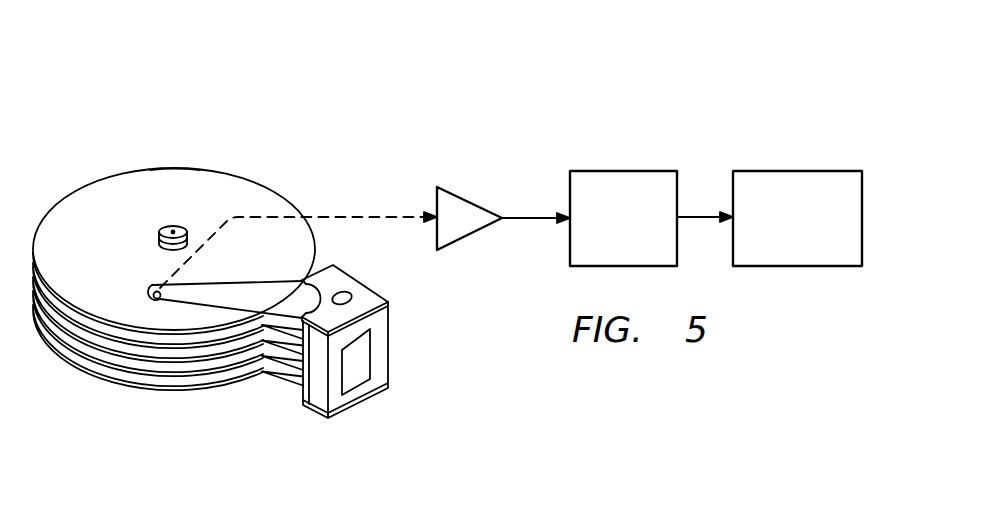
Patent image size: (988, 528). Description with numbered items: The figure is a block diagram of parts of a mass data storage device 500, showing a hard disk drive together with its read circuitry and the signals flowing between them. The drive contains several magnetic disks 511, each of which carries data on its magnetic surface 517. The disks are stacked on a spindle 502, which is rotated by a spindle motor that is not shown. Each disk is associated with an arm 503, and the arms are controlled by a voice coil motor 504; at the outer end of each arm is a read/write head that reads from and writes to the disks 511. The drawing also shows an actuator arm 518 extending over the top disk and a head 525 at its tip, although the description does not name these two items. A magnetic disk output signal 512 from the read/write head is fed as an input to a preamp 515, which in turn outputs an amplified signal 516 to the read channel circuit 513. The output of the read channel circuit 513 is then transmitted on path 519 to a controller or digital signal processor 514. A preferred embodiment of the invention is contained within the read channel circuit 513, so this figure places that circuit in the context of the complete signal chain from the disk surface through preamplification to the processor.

The mass data storage device 500 is at (291, 136).
The magnetic disks 511 is at (88, 196).
The magnetic surface 517 is at (172, 168).
The spindle 502 is at (163, 227).
The actuator arm 518 is at (236, 283).
The read head 525 is at (154, 296).
The arm 503 is at (282, 384).
The voice coil motor 504 is at (384, 346).
The magnetic disk output signal 512 is at (378, 216).
The preamp 515 is at (470, 240).
The amplified signal 516 is at (534, 216).
The read channel circuit 513 is at (624, 171).
The path 519 is at (700, 216).
The digital signal processor 514 is at (800, 171).